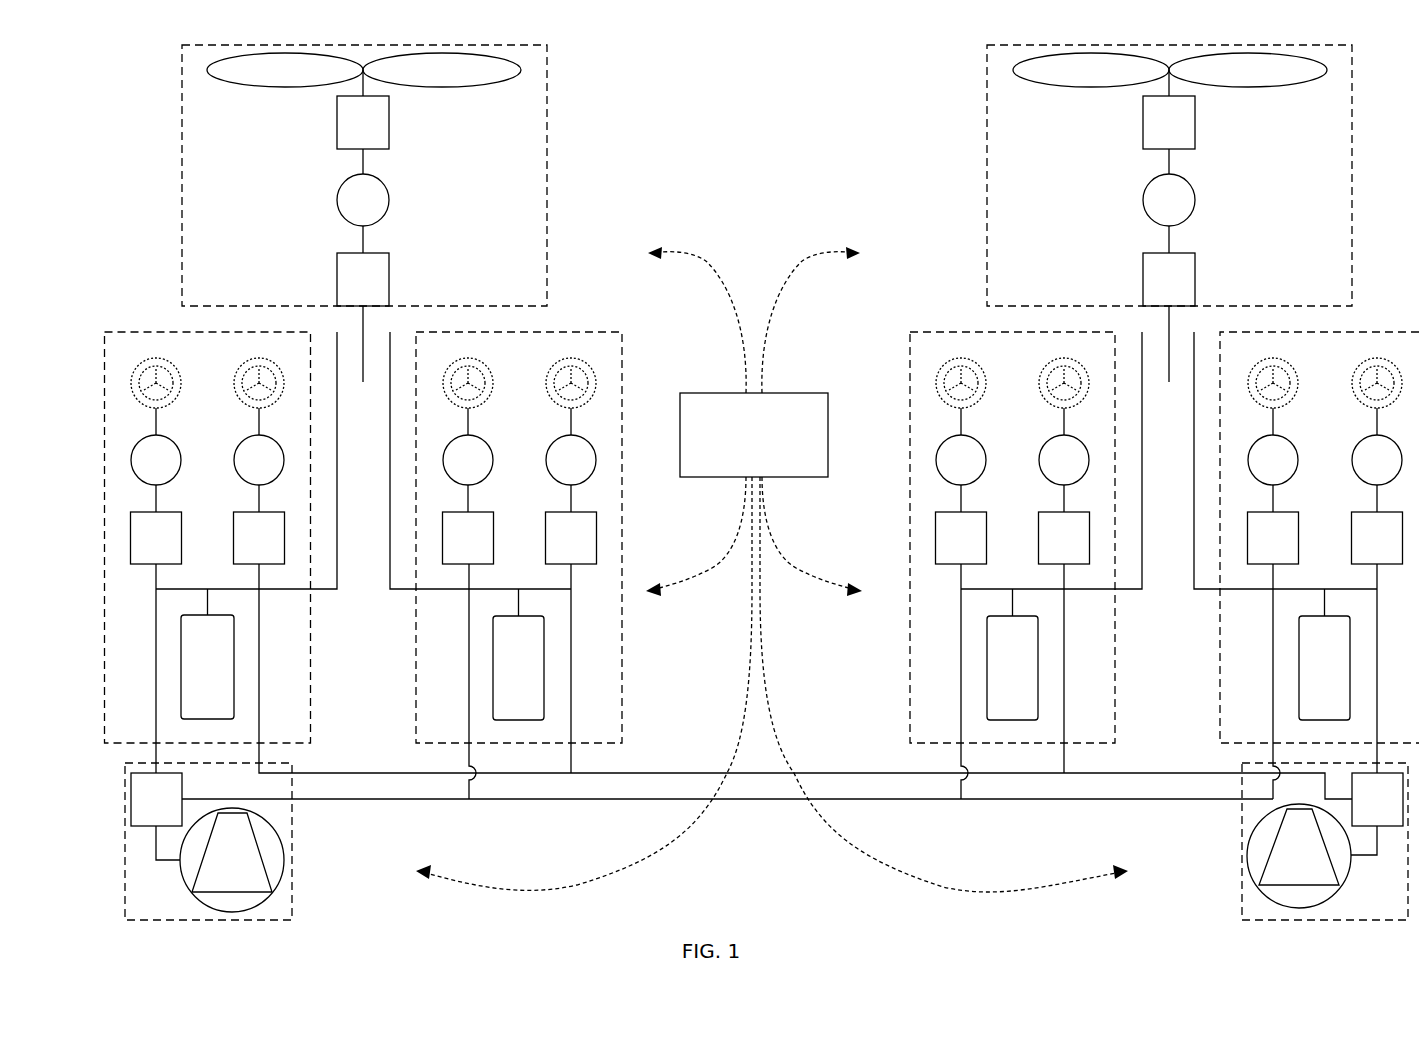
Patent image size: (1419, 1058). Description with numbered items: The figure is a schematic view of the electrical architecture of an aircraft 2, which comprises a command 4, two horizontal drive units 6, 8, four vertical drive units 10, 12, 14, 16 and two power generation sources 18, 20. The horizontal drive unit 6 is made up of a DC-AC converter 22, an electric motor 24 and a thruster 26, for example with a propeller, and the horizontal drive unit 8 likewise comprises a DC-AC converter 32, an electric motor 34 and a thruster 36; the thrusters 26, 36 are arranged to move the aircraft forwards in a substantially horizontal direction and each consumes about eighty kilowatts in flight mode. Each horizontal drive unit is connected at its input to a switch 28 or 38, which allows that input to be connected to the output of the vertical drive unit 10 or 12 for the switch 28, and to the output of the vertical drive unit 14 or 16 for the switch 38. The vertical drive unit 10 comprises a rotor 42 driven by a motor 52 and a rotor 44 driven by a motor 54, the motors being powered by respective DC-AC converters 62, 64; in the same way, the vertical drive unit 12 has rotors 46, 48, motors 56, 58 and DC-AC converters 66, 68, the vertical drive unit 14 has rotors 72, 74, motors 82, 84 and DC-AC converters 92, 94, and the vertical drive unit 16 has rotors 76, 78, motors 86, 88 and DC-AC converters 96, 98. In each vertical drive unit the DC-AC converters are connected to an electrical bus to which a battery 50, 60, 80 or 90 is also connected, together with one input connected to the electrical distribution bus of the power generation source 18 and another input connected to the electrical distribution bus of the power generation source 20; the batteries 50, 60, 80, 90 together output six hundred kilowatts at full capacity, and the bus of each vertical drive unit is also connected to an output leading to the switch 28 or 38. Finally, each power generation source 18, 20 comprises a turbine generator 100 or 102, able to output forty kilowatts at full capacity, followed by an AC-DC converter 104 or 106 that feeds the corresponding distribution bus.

The aircraft 2 is at (753, 203).
The command 4 is at (754, 435).
The horizontal drive unit 6 is at (399, 175).
The horizontal drive unit 8 is at (1132, 175).
The vertical drive unit 10 is at (249, 537).
The vertical drive unit 12 is at (479, 537).
The vertical drive unit 14 is at (1053, 537).
The vertical drive unit 16 is at (1281, 537).
The power generation source 18 is at (241, 841).
The power generation source 20 is at (1288, 841).
The DC-AC converter 22 is at (363, 279).
The electric motor 24 is at (363, 200).
The thruster 26 is at (363, 122).
The switch 28 is at (362, 359).
The DC-AC converter 32 is at (1169, 279).
The electric motor 34 is at (1169, 200).
The thruster 36 is at (1169, 122).
The switch 38 is at (1168, 362).
The rotor 42 is at (148, 370).
The rotor 44 is at (259, 370).
The rotor 46 is at (468, 370).
The rotor 48 is at (571, 370).
The battery 50 is at (207, 654).
The motor 52 is at (156, 460).
The motor 54 is at (259, 460).
The motor 56 is at (468, 460).
The motor 58 is at (571, 460).
The battery 60 is at (518, 654).
The DC-AC converter 62 is at (156, 538).
The DC-AC converter 64 is at (259, 538).
The DC-AC converter 66 is at (468, 538).
The DC-AC converter 68 is at (571, 538).
The rotor 72 is at (961, 370).
The rotor 74 is at (1064, 370).
The rotor 76 is at (1273, 370).
The rotor 78 is at (1377, 370).
The battery 80 is at (1012, 654).
The motor 82 is at (961, 460).
The motor 84 is at (1064, 460).
The motor 86 is at (1273, 460).
The motor 88 is at (1377, 460).
The battery 90 is at (1324, 654).
The DC-AC converter 92 is at (961, 538).
The DC-AC converter 94 is at (1064, 538).
The DC-AC converter 96 is at (1273, 538).
The DC-AC converter 98 is at (1377, 538).
The turbine generator 100 is at (232, 860).
The turbine generator 102 is at (1299, 856).
The AC-DC converter 104 is at (156, 799).
The AC-DC converter 106 is at (1377, 799).